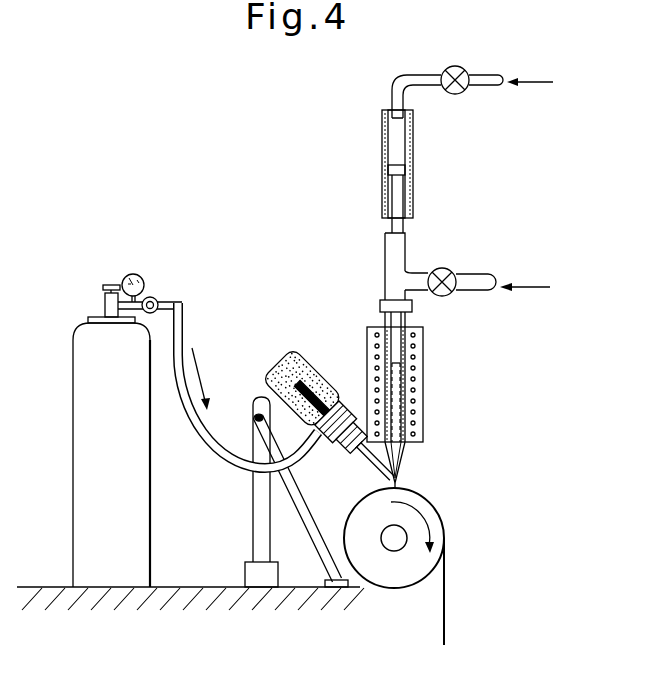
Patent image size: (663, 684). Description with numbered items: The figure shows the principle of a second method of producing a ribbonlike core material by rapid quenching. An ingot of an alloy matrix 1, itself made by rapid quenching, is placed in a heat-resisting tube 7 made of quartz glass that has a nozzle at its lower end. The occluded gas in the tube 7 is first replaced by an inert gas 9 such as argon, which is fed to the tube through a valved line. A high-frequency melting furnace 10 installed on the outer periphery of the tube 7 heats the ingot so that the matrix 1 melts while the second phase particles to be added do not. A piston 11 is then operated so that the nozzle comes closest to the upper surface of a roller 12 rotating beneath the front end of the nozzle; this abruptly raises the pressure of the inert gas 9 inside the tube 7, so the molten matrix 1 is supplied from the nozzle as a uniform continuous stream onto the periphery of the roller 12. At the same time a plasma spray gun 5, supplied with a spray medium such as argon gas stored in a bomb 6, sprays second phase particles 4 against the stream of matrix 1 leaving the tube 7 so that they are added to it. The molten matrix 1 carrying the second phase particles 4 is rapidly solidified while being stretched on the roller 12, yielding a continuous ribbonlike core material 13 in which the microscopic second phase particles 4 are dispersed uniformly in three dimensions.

The matrix 1 is at (388, 372).
The second phase particles 4 is at (339, 379).
The plasma spray gun 5 is at (279, 352).
The bomb 6 is at (74, 438).
The heat-resisting tube 7 is at (405, 398).
The inert gas 9 is at (523, 290).
The high-frequency melting furnace 10 is at (423, 343).
The piston 11 is at (414, 165).
The roller 12 is at (408, 592).
The core material 13 is at (445, 627).